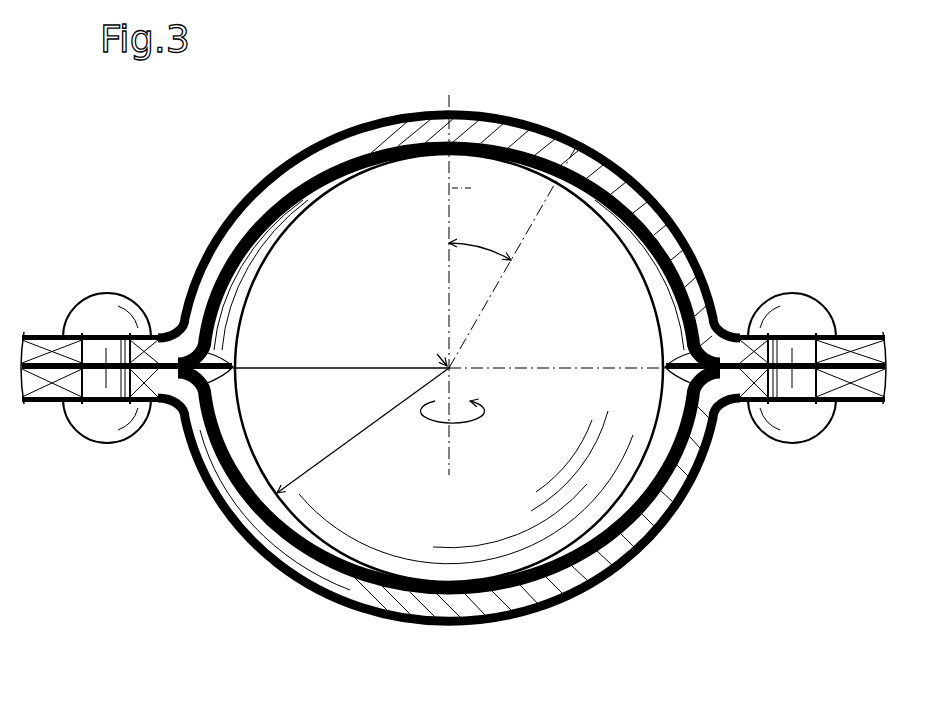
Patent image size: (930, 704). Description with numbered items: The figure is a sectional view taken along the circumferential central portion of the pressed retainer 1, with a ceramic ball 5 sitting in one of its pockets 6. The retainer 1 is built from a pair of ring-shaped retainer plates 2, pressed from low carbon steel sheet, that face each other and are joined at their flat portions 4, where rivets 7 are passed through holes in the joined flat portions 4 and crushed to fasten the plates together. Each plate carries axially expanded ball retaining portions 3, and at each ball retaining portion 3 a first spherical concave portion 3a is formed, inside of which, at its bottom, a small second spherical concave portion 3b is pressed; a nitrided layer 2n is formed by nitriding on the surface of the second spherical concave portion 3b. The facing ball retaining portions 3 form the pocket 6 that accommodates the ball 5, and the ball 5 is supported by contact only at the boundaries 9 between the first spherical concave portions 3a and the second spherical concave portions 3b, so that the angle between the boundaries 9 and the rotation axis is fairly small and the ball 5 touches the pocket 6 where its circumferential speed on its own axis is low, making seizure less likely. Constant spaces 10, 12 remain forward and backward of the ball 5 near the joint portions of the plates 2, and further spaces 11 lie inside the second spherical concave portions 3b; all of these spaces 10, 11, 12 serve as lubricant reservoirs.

The pressed retainer 1 is at (716, 242).
The ring-shaped retainer plate 2 is at (622, 169).
The nitrided layer 2n is at (485, 140).
The ball retaining portion 3 is at (531, 116).
The first spherical concave portion 3a is at (255, 247).
The second spherical concave portion 3b is at (400, 164).
The flat portion 4 is at (864, 338).
The ball 5 is at (323, 240).
The pocket 6 is at (647, 230).
The rivet 7 is at (793, 312).
The boundary 9 is at (351, 182).
The space 10 is at (703, 343).
The space 11 is at (442, 128).
The space 12 is at (222, 352).